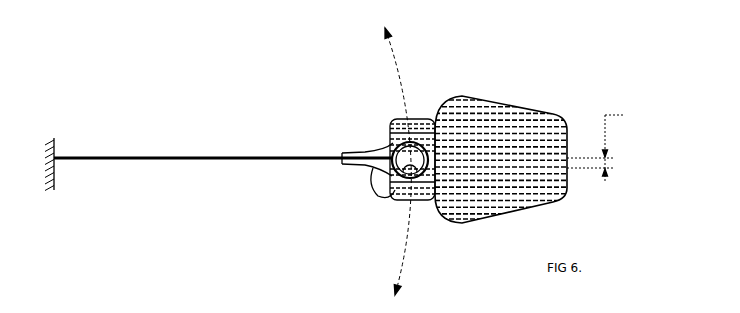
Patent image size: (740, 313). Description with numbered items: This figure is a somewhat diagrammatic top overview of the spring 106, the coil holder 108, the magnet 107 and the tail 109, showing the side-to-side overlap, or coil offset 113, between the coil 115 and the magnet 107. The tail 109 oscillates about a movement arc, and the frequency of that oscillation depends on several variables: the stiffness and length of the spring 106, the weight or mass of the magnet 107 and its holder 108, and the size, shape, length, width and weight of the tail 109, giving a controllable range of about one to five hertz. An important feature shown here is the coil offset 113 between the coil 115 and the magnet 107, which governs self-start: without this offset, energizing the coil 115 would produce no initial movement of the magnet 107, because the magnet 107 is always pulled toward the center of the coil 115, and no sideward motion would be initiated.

The spring 106 is at (223, 130).
The magnet 107 is at (375, 125).
The coil holder 108 is at (382, 122).
The tail 109 is at (511, 142).
The coil offset 113 is at (607, 147).
The coil 115 is at (363, 190).